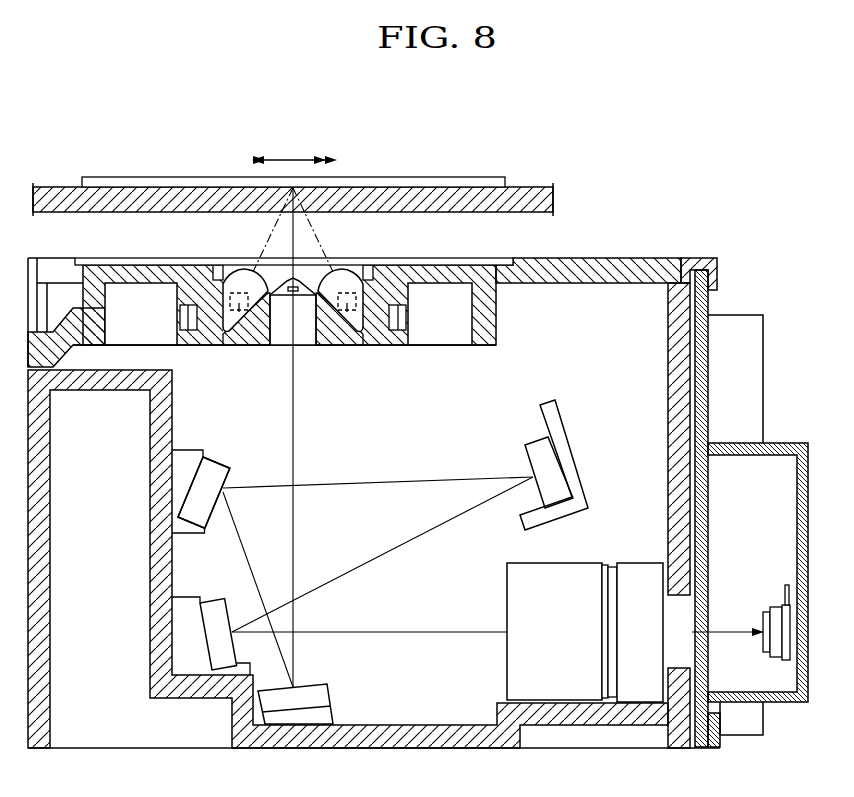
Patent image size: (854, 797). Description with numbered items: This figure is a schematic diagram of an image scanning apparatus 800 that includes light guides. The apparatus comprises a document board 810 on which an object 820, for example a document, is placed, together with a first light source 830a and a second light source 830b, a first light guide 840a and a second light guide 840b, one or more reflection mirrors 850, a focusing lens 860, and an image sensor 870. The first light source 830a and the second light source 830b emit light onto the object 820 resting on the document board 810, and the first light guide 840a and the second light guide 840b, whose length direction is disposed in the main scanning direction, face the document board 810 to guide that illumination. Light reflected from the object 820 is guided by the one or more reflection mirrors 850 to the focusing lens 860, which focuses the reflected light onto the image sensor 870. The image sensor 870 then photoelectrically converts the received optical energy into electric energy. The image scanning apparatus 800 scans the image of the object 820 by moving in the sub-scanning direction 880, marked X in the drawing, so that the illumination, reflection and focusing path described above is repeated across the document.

The image scanning apparatus 800 is at (612, 125).
The document board 810 is at (175, 190).
The object 820 is at (115, 181).
The first light source 830a is at (237, 336).
The second light source 830b is at (349, 336).
The first light guide 840a is at (216, 266).
The second light guide 840b is at (372, 266).
The reflection mirror 850 is at (218, 466).
The focusing lens 860 is at (635, 578).
The image sensor 870 is at (778, 605).
The sub-scanning direction 880 is at (311, 144).